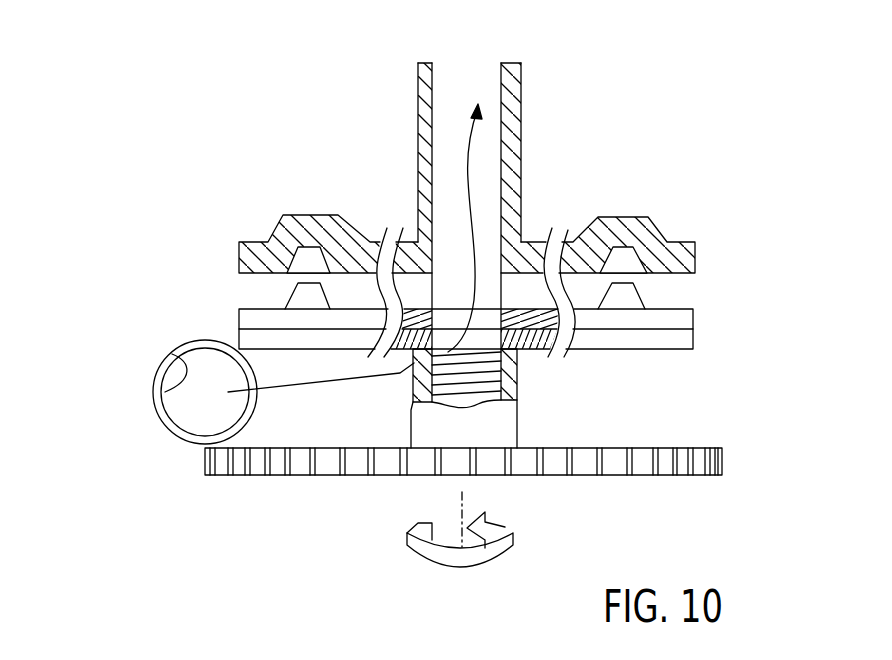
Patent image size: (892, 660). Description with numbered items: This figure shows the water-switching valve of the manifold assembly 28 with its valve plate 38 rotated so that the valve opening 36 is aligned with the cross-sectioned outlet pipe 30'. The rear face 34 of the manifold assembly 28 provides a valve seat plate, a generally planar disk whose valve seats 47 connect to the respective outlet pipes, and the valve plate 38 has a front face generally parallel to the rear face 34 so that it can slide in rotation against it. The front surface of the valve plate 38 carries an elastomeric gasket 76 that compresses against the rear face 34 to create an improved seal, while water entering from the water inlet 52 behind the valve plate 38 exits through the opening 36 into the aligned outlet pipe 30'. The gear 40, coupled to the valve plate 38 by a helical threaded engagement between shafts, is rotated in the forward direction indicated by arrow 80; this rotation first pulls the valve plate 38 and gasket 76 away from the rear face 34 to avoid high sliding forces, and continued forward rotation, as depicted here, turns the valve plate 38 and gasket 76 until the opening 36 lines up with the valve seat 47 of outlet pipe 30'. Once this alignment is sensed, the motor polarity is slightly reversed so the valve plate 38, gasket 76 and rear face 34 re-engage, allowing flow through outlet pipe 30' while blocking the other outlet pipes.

The manifold assembly 28 is at (292, 161).
The outlet pipe 30' is at (492, 168).
The valve seat 47 is at (418, 152).
The valve opening 36 is at (496, 245).
The rear face 34 is at (677, 275).
The elastomeric gasket 76 is at (693, 318).
The valve plate 38 is at (693, 347).
The water inlet 52 is at (170, 392).
The gear 40 is at (665, 449).
The arrow 80 is at (503, 527).